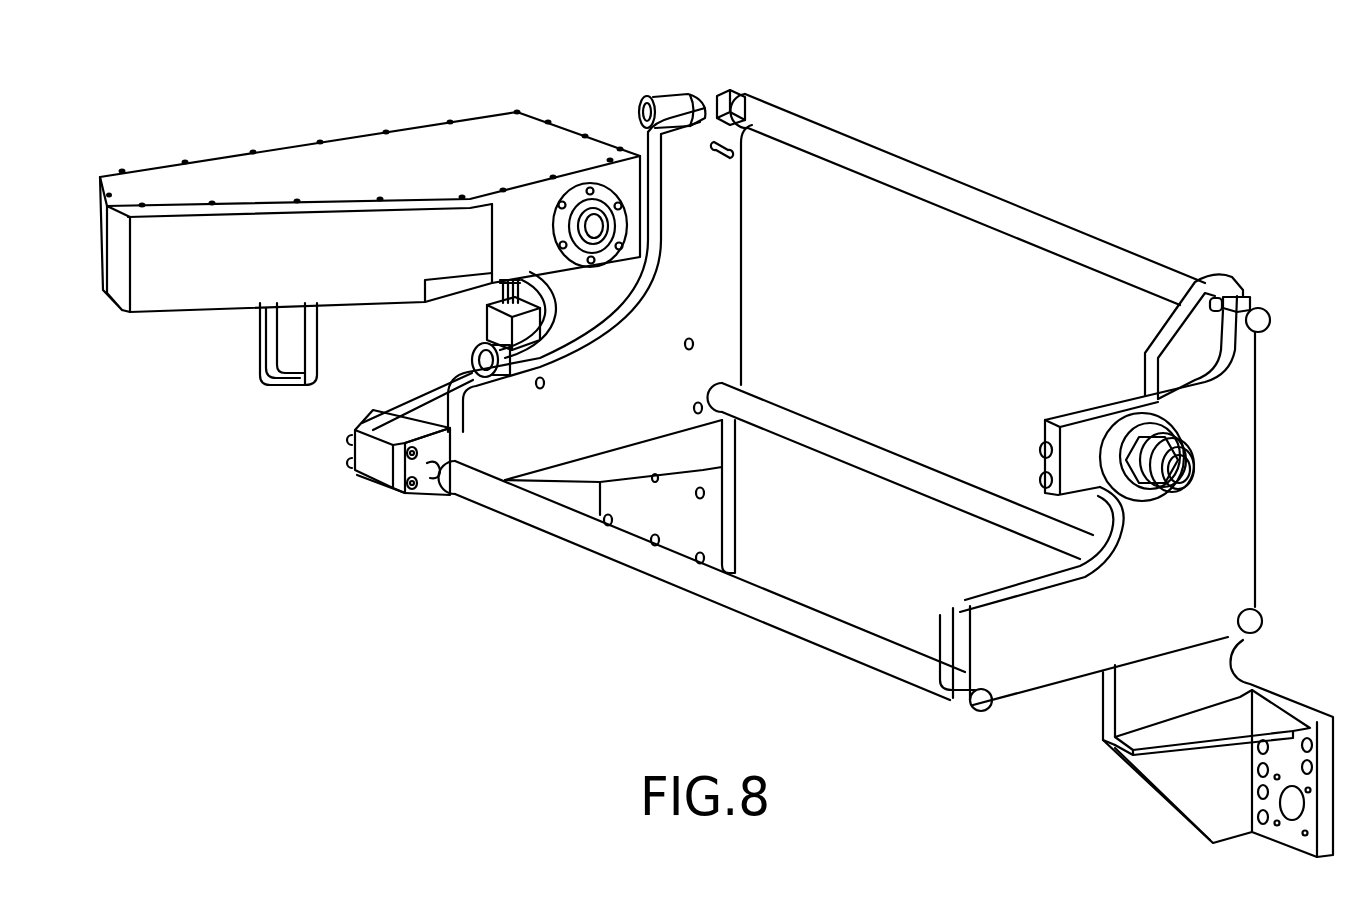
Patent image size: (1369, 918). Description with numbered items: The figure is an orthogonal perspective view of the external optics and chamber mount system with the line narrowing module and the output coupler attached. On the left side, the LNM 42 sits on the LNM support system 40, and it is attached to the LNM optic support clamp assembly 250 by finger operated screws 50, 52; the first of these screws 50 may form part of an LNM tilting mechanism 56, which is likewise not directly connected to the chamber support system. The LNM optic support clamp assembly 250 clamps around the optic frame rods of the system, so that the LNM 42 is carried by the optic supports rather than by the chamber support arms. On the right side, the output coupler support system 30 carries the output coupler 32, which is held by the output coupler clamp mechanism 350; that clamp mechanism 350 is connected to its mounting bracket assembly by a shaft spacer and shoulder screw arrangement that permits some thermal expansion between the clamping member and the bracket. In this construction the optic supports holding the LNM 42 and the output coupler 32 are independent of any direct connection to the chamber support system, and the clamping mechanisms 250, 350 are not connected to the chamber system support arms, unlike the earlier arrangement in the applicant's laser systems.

The output coupler support system 30 is at (1233, 483).
The output coupler 32 is at (1172, 427).
The line narrowing unit/package/module (LNM) support system 40 is at (330, 403).
The LNM 42 is at (298, 176).
The finger operated screw 50 is at (655, 97).
The finger operated screw 52 is at (473, 350).
The LNM tilting mechanism 56 is at (682, 98).
The LNM optic support clamp assembly 250 is at (728, 255).
The output coupler clamp mechanism 350 is at (1162, 333).